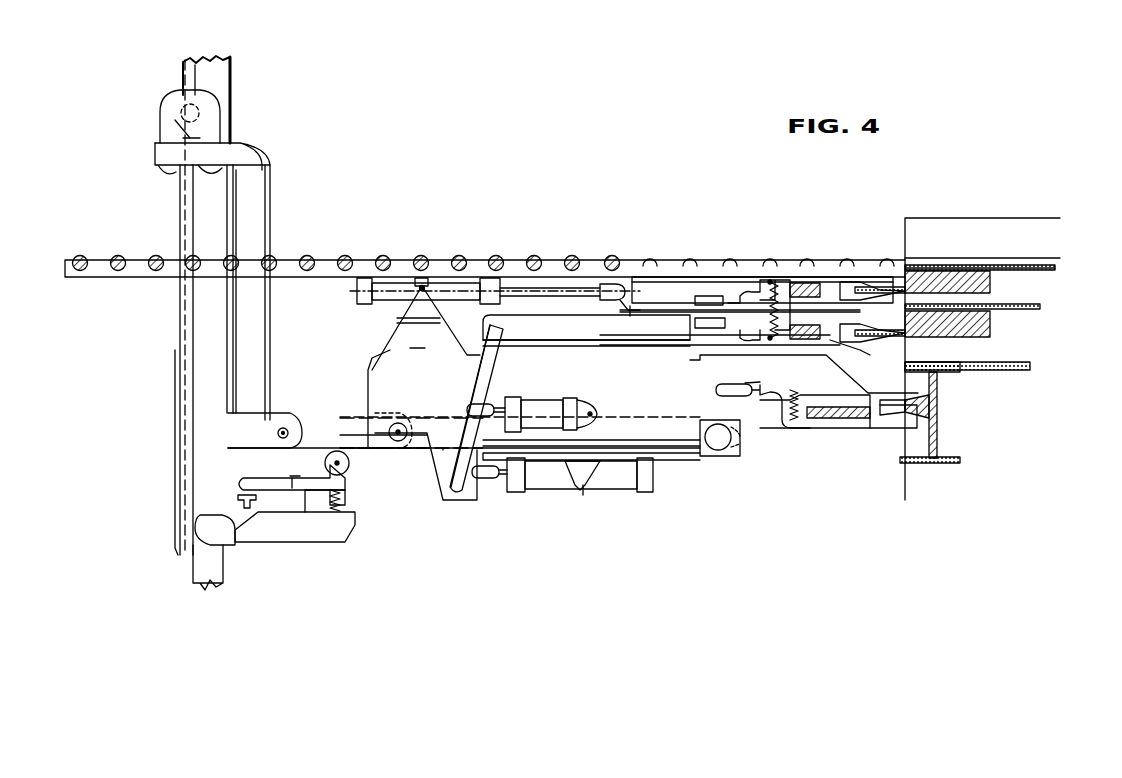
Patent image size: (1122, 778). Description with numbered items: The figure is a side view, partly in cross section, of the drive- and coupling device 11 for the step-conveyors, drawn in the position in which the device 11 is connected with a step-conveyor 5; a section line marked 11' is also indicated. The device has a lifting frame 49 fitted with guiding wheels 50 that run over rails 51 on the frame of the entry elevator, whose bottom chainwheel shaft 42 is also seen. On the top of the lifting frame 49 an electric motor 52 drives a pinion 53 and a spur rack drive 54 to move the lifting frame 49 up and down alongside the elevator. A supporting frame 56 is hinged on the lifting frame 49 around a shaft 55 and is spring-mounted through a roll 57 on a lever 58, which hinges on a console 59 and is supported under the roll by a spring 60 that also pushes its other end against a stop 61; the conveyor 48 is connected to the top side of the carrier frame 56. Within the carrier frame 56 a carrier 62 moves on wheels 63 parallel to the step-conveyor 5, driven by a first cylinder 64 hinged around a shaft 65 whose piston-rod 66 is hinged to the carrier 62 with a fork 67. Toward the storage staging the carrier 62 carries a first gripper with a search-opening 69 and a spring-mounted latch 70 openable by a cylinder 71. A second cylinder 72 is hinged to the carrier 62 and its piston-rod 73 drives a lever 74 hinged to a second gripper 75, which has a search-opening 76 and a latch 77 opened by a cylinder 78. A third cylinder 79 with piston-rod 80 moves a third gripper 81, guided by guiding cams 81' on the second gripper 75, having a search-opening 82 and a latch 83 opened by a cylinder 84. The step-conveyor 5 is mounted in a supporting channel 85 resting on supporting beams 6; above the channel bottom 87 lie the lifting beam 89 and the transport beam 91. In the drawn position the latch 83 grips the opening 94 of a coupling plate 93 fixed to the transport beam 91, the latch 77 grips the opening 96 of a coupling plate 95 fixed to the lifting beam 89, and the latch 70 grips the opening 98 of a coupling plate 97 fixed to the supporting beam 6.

The step-conveyor 5 is at (945, 206).
The supporting beam 6 is at (938, 438).
The drive- and coupling device 11 is at (624, 214).
The section line 11' is at (649, 549).
The shaft 42 is at (247, 505).
The conveyor 48 is at (318, 268).
The lifting frame 49 is at (250, 328).
The guiding wheels 50 is at (250, 165).
The rails 51 is at (215, 78).
The electric motor 52 is at (178, 110).
The pinion 53 is at (160, 172).
The spur rack drive 54 is at (180, 212).
The shaft 55 is at (280, 437).
The supporting frame 56 is at (675, 455).
The roll 57 is at (325, 463).
The lever 58 is at (350, 485).
The console 59 is at (310, 533).
The spring 60 is at (340, 500).
The stop 61 is at (236, 497).
The carrier 62 is at (368, 370).
The wheels 63 is at (718, 450).
The first hydraulic or pneumatic cylinder 64 is at (562, 478).
The shaft 65 is at (586, 472).
The piston-rod 66 is at (501, 482).
The fork 67 is at (478, 483).
The search-opening 69 is at (918, 413).
The spring-mounted hingeable latch 70 is at (862, 425).
The cylinder 71 is at (745, 395).
The second cylinder 72 is at (570, 405).
The piston-rod 73 is at (492, 408).
The lever 74 is at (475, 370).
The second gripper 75 is at (515, 322).
The search-opening 76 is at (826, 360).
The spring-mounted latch 77 is at (838, 345).
The cylinder 78 is at (722, 323).
The third cylinder 79 is at (402, 285).
The piston-rod 80 is at (567, 290).
The third gripper 81 is at (746, 281).
The guiding cams 81' is at (612, 320).
The search-opening 82 is at (820, 296).
The spring-mounted hingeable latch 83 is at (798, 280).
The cylinder 84 is at (709, 300).
The supporting channel 85 is at (992, 238).
The bottom 87 is at (1025, 372).
The lifting beam 89 is at (1040, 308).
The transport beam 91 is at (1050, 268).
The coupling plate 93 is at (992, 292).
The opening 94 is at (855, 293).
The coupling plate 95 is at (992, 335).
The opening 96 is at (856, 336).
The coupling plate 97 is at (830, 420).
The opening 98 is at (932, 403).